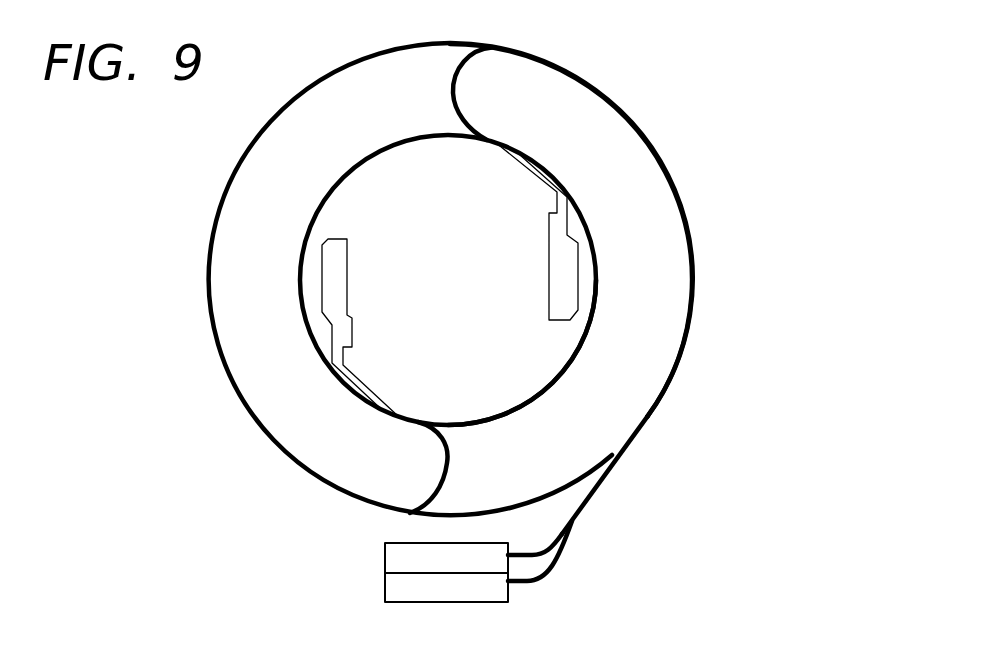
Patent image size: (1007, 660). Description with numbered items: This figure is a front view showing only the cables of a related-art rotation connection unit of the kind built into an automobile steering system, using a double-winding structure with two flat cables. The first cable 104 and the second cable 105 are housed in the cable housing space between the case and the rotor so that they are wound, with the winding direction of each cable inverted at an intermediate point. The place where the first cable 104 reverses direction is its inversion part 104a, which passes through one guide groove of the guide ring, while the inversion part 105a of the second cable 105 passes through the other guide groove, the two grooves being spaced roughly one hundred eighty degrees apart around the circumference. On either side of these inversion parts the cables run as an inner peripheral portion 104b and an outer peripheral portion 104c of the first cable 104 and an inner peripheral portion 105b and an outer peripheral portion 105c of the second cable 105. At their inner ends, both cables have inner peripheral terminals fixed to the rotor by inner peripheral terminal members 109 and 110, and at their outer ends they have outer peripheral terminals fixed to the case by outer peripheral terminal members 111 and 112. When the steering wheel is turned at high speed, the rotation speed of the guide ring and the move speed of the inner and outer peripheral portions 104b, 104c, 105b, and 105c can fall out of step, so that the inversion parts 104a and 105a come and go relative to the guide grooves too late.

The first cable 104 is at (533, 581).
The second cable 105 is at (550, 556).
The inversion part of the first cable 104a is at (440, 460).
The inversion part of the second cable 105a is at (458, 80).
The inner peripheral portion of the first cable 104b is at (568, 373).
The inner peripheral portion of the second cable 105b is at (522, 352).
The outer peripheral portion of the first cable 104c is at (679, 203).
The outer peripheral portion of the second cable 105c is at (571, 230).
The inner peripheral terminal member 109 is at (330, 253).
The inner peripheral terminal member 110 is at (568, 265).
The outer peripheral terminal member 111 is at (403, 585).
The outer peripheral terminal member 112 is at (437, 557).